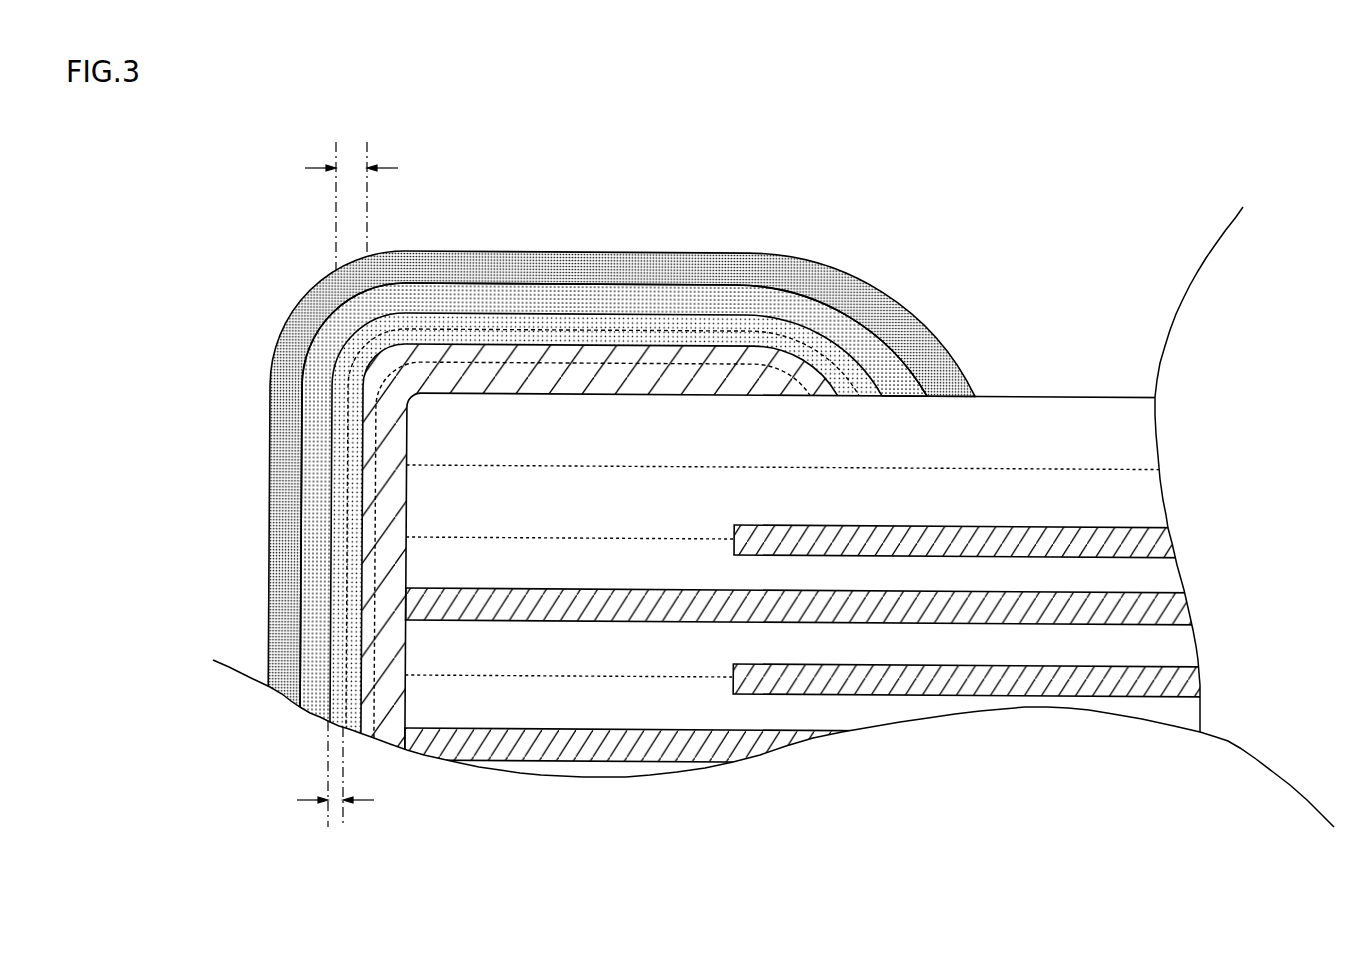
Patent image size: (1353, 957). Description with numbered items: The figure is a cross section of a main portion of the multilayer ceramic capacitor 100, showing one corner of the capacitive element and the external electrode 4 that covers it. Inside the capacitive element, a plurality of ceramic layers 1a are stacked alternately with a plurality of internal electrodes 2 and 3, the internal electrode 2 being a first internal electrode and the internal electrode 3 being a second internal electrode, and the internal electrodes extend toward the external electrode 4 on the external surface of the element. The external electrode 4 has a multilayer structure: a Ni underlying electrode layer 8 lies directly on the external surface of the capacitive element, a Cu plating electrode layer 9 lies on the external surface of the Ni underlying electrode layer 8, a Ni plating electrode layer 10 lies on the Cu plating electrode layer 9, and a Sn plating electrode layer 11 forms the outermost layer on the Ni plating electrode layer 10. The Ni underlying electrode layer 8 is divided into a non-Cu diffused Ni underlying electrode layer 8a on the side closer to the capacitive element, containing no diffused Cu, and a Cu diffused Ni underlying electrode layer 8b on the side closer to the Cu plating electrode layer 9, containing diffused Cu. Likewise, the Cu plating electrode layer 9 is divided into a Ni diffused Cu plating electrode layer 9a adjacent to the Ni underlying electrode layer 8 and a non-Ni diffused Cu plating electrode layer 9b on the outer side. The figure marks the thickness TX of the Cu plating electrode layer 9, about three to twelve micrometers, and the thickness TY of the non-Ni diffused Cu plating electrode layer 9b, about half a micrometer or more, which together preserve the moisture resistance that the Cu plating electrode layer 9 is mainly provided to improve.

The multilayer ceramic capacitor 100 is at (165, 156).
The ceramic layer 1a is at (1126, 439).
The internal electrode 2 is at (1160, 608).
The internal electrode 3 is at (1150, 540).
The external electrode 4 is at (226, 488).
The Ni underlying electrode layer 8 is at (540, 168).
The non-Cu diffused Ni underlying electrode layer 8a is at (478, 373).
The Cu diffused Ni underlying electrode layer 8b is at (506, 355).
The Cu plating electrode layer 9 is at (640, 168).
The Ni diffused Cu plating electrode layer 9a is at (588, 340).
The non-Ni diffused Cu plating electrode layer 9b is at (617, 328).
The Ni plating electrode layer 10 is at (677, 302).
The Sn plating electrode layer 11 is at (727, 272).